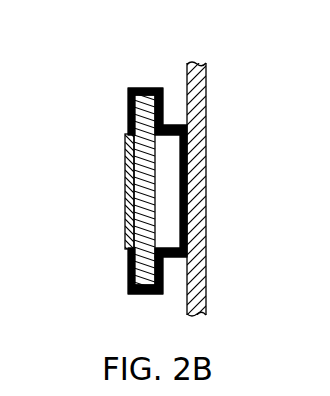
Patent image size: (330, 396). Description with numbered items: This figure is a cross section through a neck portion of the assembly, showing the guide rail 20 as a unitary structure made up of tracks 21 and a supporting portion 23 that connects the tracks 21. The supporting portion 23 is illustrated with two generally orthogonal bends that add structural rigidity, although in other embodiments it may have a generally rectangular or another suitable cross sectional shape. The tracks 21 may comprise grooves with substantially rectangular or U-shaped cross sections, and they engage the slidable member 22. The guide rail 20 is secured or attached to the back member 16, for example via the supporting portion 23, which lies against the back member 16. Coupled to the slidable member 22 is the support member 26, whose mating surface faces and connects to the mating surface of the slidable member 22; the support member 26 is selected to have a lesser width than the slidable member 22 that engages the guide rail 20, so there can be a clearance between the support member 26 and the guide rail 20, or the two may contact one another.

The back member 16 is at (200, 162).
The guide rail 20 is at (170, 181).
The tracks 21 is at (142, 88).
The slidable member 22 is at (144, 226).
The supporting portion 23 is at (185, 186).
The support member 26 is at (127, 185).